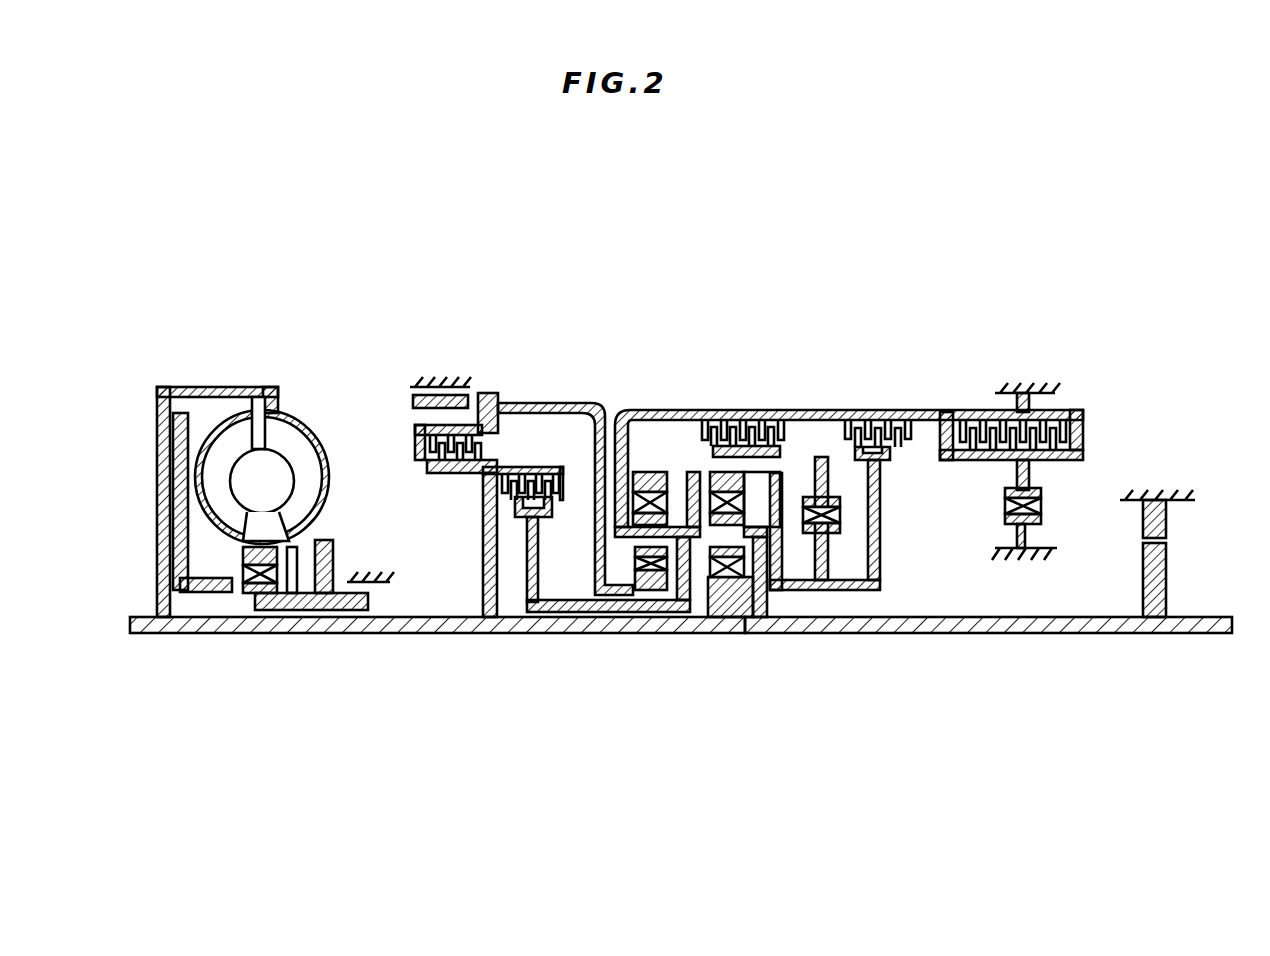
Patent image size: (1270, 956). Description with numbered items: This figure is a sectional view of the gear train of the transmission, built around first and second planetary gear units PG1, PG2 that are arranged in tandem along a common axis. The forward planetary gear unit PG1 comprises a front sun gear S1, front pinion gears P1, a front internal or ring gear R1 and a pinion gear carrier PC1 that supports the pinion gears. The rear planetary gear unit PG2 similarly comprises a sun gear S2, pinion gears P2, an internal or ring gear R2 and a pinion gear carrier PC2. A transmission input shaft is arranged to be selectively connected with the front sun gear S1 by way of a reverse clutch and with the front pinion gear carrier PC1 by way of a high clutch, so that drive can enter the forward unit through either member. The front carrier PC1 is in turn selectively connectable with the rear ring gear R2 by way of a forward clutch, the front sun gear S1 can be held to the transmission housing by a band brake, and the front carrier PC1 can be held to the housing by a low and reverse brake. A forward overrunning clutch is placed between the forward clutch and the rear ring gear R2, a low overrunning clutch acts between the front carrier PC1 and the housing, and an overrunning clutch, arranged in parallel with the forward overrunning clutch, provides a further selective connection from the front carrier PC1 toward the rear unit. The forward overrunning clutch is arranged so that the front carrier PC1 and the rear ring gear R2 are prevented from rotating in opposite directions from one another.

The front ring gear R1 is at (648, 475).
The rear ring gear R2 is at (712, 472).
The second planetary gear unit PG2 is at (757, 507).
The first planetary gear unit PG1 is at (617, 552).
The front sun gear S1 is at (652, 578).
The front pinion gears P1 is at (655, 547).
The front pinion gear carrier PC1 is at (690, 580).
The rear sun gear S2 is at (723, 590).
The rear pinion gears P2 is at (737, 548).
The rear pinion gear carrier PC2 is at (778, 580).